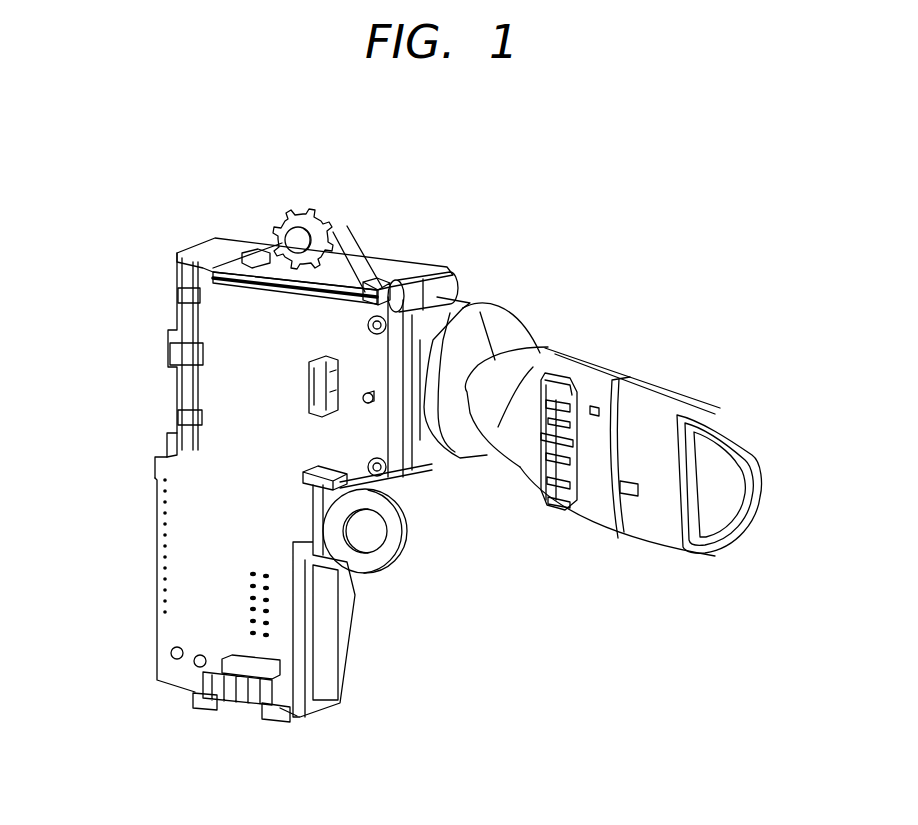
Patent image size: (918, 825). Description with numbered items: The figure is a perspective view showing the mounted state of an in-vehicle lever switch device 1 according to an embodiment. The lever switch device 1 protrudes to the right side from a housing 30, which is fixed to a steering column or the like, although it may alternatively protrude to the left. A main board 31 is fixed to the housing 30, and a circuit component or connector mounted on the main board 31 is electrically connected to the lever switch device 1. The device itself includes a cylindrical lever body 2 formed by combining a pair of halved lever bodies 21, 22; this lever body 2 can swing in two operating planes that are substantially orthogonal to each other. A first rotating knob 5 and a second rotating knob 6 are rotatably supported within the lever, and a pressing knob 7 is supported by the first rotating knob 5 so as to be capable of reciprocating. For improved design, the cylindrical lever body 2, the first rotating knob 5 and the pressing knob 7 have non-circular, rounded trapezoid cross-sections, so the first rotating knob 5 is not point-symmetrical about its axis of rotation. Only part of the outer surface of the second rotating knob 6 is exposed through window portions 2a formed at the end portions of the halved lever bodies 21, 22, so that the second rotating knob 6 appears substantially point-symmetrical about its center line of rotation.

The in-vehicle lever switch device 1 is at (493, 475).
The cylindrical lever body 2 is at (740, 278).
The window portions 2a is at (555, 380).
The first rotating knob 5 is at (653, 516).
The second rotating knob 6 is at (560, 495).
The pressing knob 7 is at (730, 513).
The halved lever body 21 is at (637, 375).
The halved lever body 22 is at (607, 377).
The housing 30 is at (388, 262).
The main board 31 is at (190, 572).